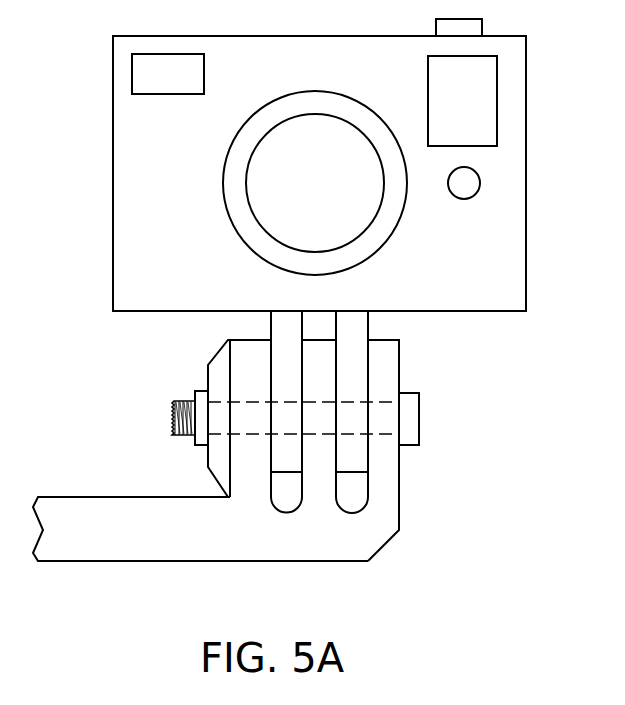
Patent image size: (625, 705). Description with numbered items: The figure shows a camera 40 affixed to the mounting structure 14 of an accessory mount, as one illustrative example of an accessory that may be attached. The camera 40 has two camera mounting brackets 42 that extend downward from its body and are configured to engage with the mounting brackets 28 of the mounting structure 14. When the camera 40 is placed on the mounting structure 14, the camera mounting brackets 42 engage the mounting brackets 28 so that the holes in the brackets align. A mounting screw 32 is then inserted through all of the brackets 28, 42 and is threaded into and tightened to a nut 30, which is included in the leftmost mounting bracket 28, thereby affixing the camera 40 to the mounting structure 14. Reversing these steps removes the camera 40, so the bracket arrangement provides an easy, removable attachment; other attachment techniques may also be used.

The mounting structure 14 is at (329, 572).
The mounting brackets 28 is at (245, 389).
The nut 30 is at (203, 445).
The mounting screw 32 is at (172, 418).
The camera 40 is at (526, 166).
The camera mounting brackets 42 is at (283, 317).